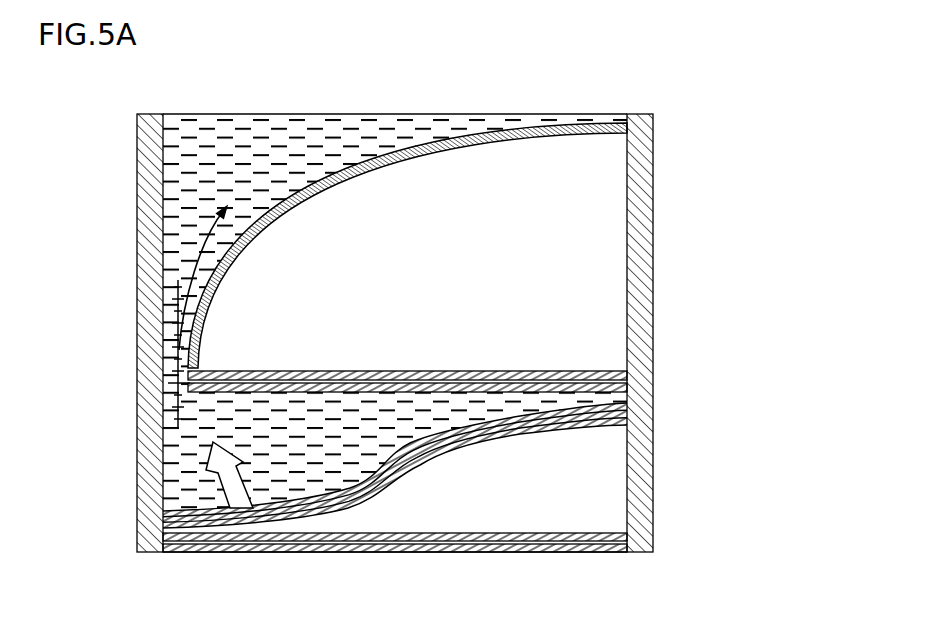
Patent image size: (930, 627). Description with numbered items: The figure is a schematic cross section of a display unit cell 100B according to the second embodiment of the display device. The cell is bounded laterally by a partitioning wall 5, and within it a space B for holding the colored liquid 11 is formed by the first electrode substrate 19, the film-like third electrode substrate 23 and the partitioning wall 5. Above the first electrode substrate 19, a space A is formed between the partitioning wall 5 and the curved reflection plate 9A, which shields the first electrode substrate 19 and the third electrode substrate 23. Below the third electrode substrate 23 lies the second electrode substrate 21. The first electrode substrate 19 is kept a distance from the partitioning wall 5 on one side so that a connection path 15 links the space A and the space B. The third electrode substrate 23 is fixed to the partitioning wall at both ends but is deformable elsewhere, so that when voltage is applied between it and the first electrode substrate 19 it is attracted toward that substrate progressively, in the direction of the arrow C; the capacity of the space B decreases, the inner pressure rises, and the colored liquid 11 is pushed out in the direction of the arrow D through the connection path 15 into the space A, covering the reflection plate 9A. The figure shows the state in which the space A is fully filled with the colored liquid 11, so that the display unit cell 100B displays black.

The display unit cell 100B is at (730, 97).
The colored liquid 11 is at (337, 137).
The curved reflection plate 9A is at (530, 150).
The partitioning wall 5 is at (150, 366).
The connection path 15 is at (172, 388).
The first electrode substrate 19 is at (597, 371).
The second electrode substrate 21 is at (587, 554).
The third electrode substrate 23 is at (563, 428).
The space A is at (228, 136).
The space B is at (347, 472).
The arrow C is at (243, 475).
The arrow D is at (200, 278).